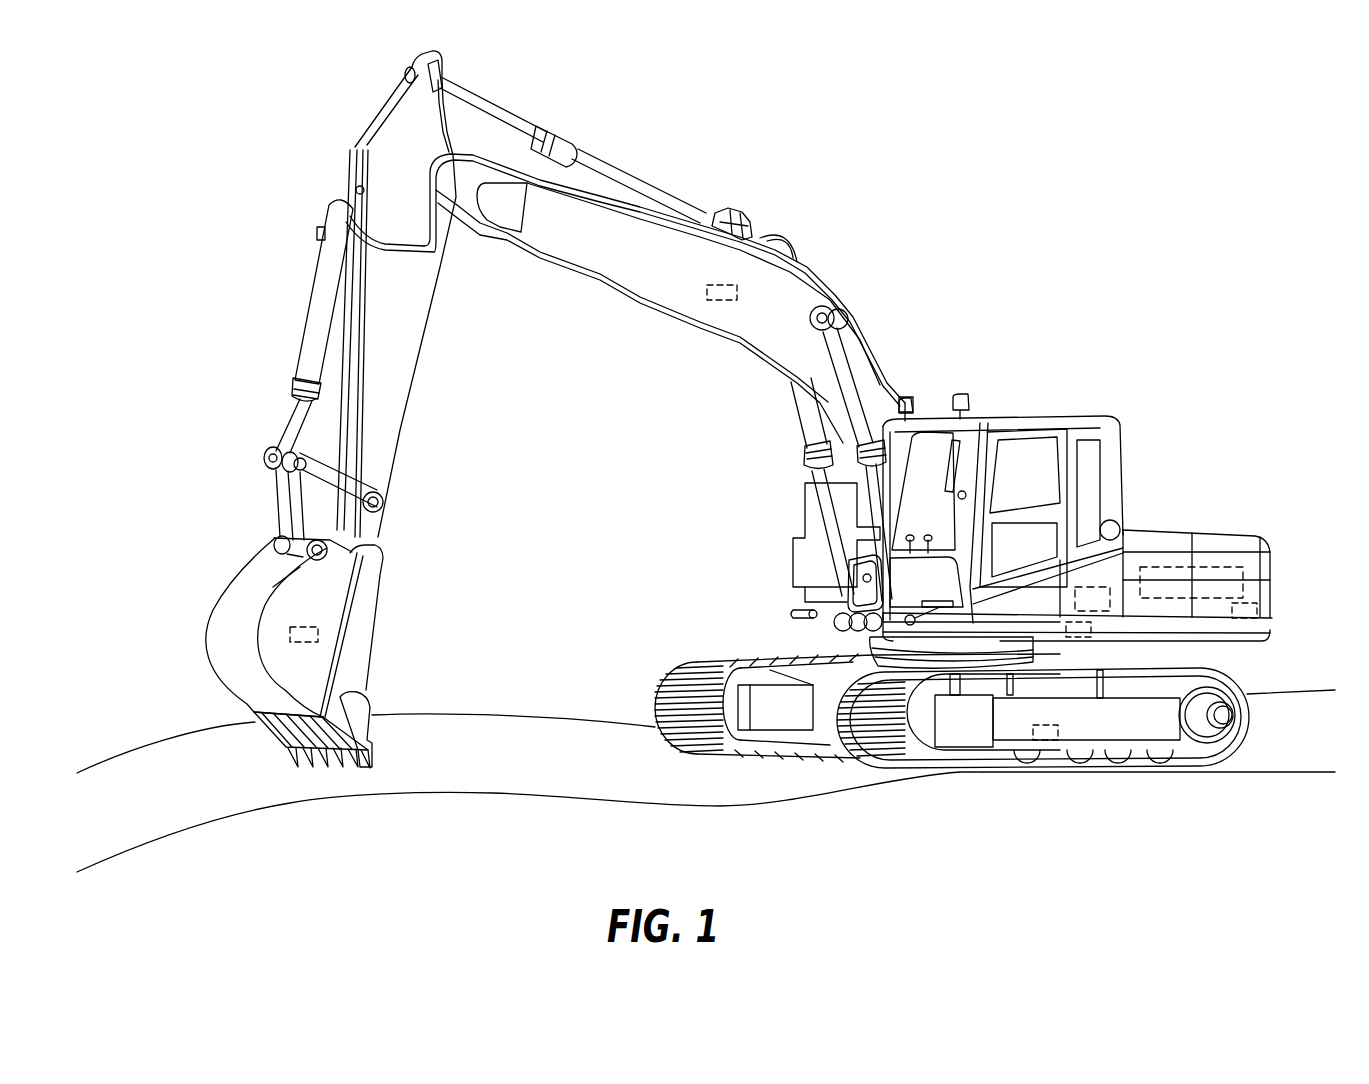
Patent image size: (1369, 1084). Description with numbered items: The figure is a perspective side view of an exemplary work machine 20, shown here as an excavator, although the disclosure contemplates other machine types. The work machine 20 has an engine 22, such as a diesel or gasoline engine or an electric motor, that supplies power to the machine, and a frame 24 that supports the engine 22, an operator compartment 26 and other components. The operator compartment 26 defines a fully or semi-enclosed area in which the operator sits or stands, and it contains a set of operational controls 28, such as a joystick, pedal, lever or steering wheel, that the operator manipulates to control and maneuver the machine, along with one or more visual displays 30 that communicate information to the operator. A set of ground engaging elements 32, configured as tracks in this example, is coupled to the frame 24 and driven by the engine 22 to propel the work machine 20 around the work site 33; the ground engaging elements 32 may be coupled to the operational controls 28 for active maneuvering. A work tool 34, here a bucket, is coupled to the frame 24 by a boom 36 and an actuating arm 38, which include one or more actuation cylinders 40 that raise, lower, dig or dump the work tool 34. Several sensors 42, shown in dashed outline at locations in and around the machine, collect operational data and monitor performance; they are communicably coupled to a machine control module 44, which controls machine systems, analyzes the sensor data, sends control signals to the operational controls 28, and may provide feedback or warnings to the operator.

The work machine 20 is at (1127, 280).
The engine 22 is at (1227, 567).
The frame 24 is at (1252, 640).
The operator compartment 26 is at (1025, 438).
The operational controls 28 is at (913, 538).
The visual displays 30 is at (973, 460).
The ground engaging elements 32 is at (707, 667).
The work site 33 is at (486, 780).
The work tool 34 is at (243, 687).
The boom 36 is at (793, 287).
The actuating arm 38 is at (398, 376).
The actuation cylinders 40 is at (618, 182).
The sensors 42 is at (705, 293).
The machine control module 44 is at (1112, 583).